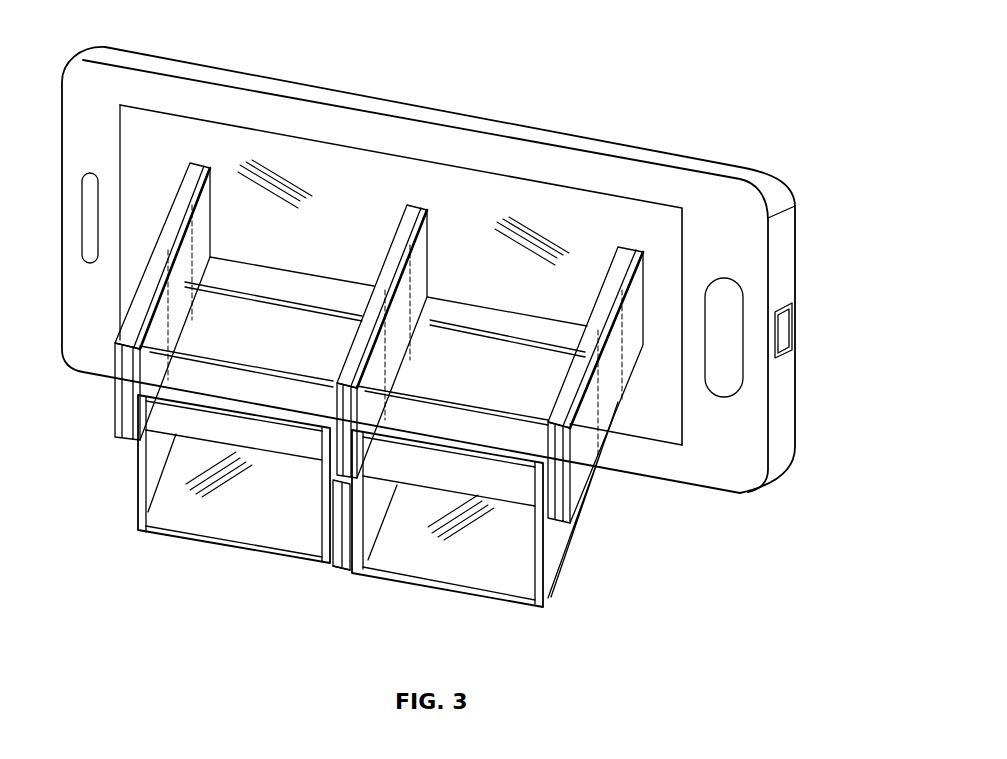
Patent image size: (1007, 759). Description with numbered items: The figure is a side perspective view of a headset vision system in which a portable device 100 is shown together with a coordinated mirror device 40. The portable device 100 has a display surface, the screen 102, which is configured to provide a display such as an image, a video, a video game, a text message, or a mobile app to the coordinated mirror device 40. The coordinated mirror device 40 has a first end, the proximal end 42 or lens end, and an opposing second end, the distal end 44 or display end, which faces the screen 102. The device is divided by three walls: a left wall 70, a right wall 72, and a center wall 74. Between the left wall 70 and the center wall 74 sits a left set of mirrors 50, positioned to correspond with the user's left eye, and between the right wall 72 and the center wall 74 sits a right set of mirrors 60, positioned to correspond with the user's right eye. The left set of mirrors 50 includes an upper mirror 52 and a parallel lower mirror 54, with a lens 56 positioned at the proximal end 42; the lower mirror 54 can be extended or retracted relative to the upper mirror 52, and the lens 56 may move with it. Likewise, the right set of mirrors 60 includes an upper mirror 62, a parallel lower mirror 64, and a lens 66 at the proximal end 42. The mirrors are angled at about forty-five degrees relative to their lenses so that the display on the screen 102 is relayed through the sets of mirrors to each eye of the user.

The portable device 100 is at (632, 94).
The screen 102 is at (662, 250).
The distal end 44 is at (525, 196).
The coordinated mirror device 40 is at (347, 447).
The proximal end 42 is at (337, 572).
The left set of mirrors 50 is at (232, 425).
The upper mirror 52 is at (300, 293).
The lower mirror 54 is at (338, 486).
The lens 56 is at (277, 513).
The right set of mirrors 60 is at (493, 454).
The upper mirror 62 is at (512, 335).
The lower mirror 64 is at (553, 530).
The lens 66 is at (467, 550).
The left wall 70 is at (196, 217).
The right wall 72 is at (590, 388).
The center wall 74 is at (408, 258).